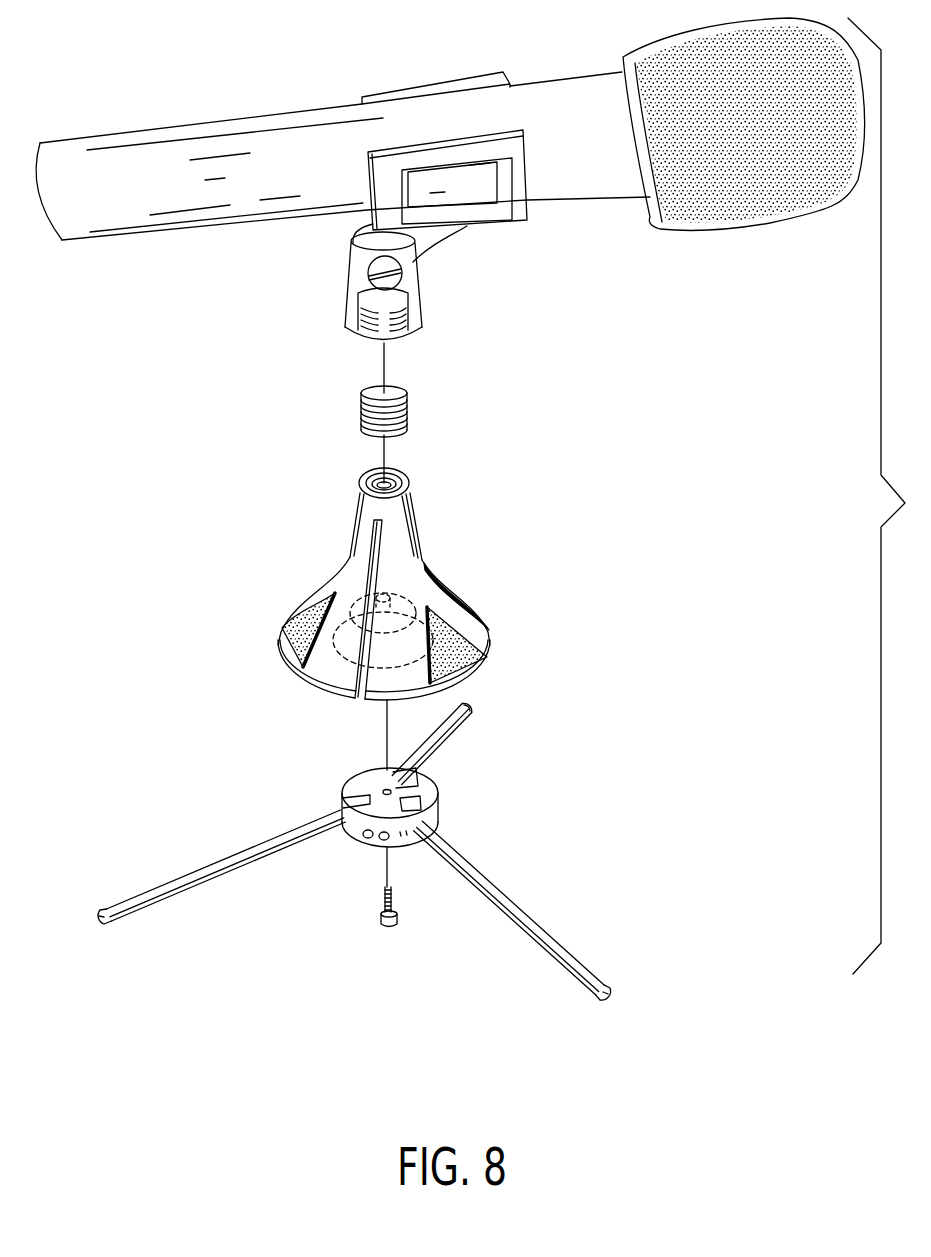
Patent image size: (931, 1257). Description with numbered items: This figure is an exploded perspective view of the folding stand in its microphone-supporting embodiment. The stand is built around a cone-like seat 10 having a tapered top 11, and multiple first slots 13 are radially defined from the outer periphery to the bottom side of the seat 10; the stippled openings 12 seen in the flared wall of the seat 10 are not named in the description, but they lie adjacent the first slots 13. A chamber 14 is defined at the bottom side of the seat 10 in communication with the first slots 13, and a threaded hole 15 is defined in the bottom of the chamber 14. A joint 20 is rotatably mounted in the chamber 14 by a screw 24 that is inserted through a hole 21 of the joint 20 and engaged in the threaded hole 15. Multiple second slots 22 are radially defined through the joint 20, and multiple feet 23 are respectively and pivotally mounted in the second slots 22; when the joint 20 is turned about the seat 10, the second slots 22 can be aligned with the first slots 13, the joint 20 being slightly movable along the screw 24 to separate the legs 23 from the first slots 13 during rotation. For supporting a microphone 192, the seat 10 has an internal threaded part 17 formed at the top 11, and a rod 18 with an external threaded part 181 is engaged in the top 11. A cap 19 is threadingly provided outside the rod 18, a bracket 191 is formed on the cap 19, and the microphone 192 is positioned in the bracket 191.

The cone-like seat 10 is at (409, 578).
The tapered top 11 is at (407, 515).
The window opening 12 is at (467, 663).
The first slots 13 is at (373, 542).
The chamber 14 is at (350, 653).
The threaded hole 15 is at (436, 575).
The internal threaded part 17 is at (397, 472).
The rod 18 is at (377, 422).
The external threaded part 181 is at (362, 418).
The cap 19 is at (415, 297).
The bracket 191 is at (518, 213).
The microphone 192 is at (622, 93).
The joint 20 is at (409, 822).
The hole 21 is at (385, 792).
The second slots 22 is at (437, 818).
The feet 23 is at (507, 897).
The screw 24 is at (392, 925).